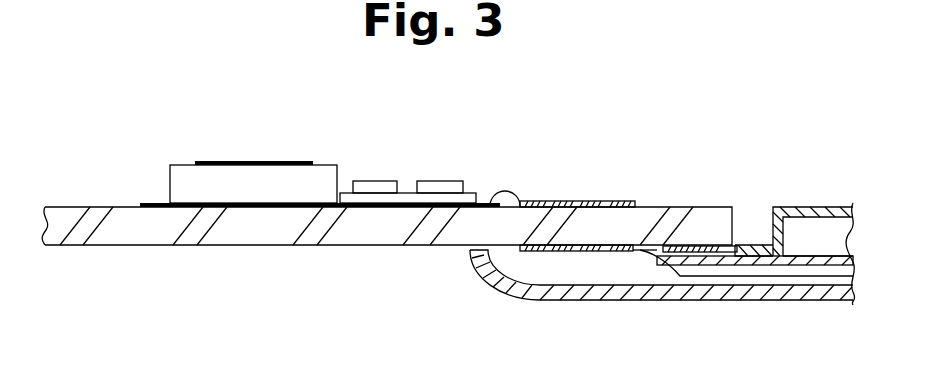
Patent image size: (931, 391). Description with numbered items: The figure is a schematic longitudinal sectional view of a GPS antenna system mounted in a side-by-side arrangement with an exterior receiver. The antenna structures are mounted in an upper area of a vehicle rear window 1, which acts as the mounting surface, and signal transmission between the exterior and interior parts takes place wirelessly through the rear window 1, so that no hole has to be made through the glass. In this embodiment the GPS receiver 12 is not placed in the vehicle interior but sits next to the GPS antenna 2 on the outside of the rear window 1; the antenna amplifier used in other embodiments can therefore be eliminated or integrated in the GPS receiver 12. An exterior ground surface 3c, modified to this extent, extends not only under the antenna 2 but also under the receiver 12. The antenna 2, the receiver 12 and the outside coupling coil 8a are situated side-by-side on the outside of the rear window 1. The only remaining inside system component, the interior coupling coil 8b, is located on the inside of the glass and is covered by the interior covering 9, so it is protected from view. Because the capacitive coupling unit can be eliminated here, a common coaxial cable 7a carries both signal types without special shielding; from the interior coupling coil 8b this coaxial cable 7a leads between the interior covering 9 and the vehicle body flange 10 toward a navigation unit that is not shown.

The vehicle rear window 1 is at (125, 234).
The GPS antenna 2 is at (252, 167).
The exterior ground surface 3c is at (364, 208).
The GPS receiver 12 is at (406, 194).
The outside coupling coil 8a is at (577, 200).
The interior coupling coil 8b is at (580, 252).
The interior covering 9 is at (472, 262).
The coaxial cable 7a is at (688, 277).
The vehicle body flange 10 is at (765, 258).